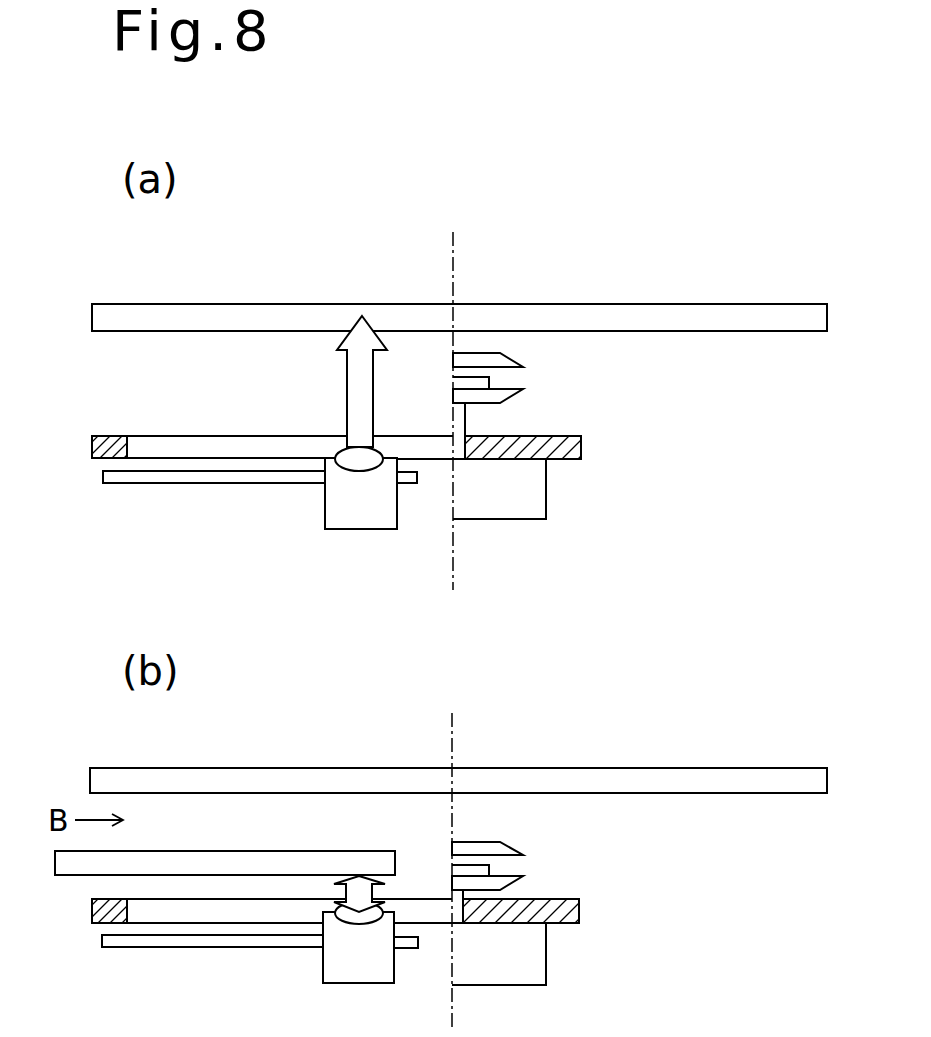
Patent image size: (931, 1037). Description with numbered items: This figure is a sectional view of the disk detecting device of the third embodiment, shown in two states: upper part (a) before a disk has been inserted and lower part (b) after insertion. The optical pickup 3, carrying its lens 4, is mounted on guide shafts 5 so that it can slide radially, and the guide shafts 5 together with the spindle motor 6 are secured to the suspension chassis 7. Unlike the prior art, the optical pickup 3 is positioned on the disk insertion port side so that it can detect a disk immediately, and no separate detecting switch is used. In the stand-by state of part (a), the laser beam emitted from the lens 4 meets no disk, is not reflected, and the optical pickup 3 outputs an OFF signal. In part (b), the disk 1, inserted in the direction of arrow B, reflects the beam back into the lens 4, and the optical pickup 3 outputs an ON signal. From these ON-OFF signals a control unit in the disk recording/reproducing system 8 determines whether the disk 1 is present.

The disk 1 is at (175, 851).
The optical pickup 3 is at (325, 497).
The lens 4 is at (353, 455).
The guide shafts 5 is at (205, 483).
The spindle motor 6 is at (512, 493).
The suspension chassis 7 is at (581, 448).
The disk recording/reproducing system 8 is at (468, 315).